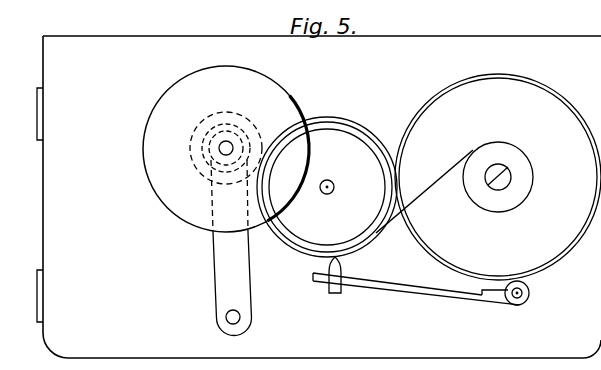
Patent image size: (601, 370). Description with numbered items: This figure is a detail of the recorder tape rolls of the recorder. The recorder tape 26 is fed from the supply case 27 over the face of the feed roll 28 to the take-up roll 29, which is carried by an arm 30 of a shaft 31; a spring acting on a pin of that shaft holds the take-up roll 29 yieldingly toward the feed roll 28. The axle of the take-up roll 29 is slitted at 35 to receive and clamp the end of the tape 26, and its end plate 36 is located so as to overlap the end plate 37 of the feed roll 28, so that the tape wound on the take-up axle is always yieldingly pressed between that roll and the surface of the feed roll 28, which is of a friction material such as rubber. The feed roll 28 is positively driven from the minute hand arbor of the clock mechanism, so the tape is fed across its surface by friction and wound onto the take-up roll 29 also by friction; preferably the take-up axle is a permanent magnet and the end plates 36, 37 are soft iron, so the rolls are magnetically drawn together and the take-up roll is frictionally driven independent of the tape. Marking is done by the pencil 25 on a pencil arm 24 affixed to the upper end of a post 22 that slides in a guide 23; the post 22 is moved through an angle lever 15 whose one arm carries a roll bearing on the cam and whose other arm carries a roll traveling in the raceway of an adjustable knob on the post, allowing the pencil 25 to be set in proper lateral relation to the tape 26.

The angle lever 15 is at (570, 29).
The post 22 is at (530, 292).
The guide 23 is at (520, 304).
The pencil arm 24 is at (443, 299).
The pencil 25 is at (344, 273).
The recorder tape 26 is at (404, 210).
The supply case 27 is at (534, 90).
The feed roll 28 is at (363, 137).
The take-up roll 29 is at (237, 113).
The arm 30 is at (216, 265).
The shaft 31 is at (228, 322).
The slit 35 is at (205, 152).
The end plate of take-up roll 36 is at (286, 104).
The end plate of feed roll 37 is at (332, 137).